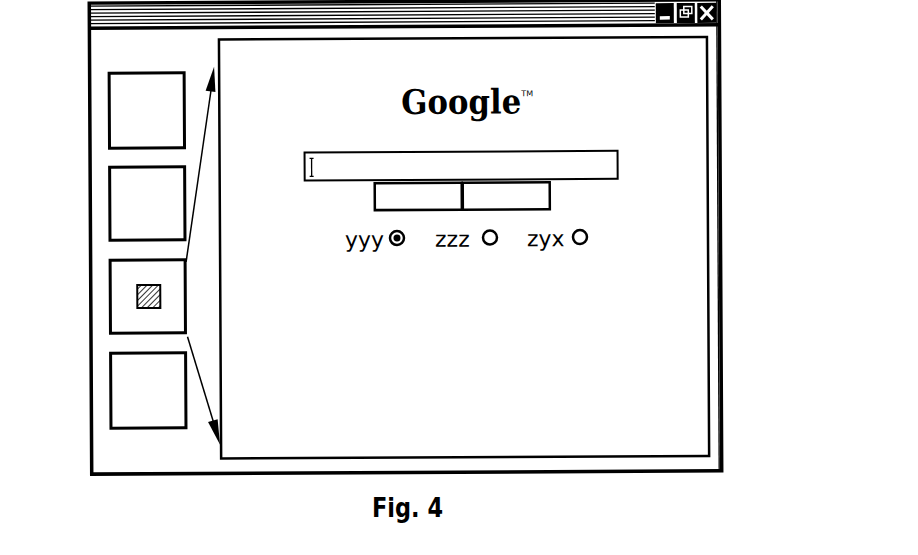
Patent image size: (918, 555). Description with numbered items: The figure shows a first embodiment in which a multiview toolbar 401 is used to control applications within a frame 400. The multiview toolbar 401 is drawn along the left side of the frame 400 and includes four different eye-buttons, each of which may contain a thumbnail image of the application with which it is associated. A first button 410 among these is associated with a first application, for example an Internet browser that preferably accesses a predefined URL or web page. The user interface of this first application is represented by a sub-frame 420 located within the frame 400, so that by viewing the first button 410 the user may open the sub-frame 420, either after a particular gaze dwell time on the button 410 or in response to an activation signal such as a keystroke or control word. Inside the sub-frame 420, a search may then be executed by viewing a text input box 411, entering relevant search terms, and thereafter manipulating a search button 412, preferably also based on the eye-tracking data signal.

The frame 400 is at (818, 30).
The multiview toolbar 401 is at (83, 71).
The first button 410 is at (186, 296).
The text input box 411 is at (445, 144).
The search button 412 is at (412, 205).
The sub-frame 420 is at (512, 247).